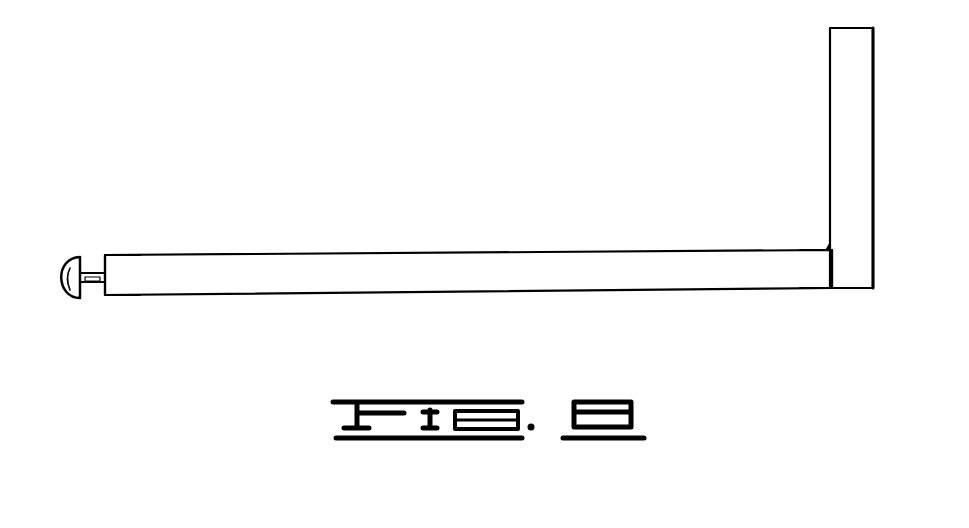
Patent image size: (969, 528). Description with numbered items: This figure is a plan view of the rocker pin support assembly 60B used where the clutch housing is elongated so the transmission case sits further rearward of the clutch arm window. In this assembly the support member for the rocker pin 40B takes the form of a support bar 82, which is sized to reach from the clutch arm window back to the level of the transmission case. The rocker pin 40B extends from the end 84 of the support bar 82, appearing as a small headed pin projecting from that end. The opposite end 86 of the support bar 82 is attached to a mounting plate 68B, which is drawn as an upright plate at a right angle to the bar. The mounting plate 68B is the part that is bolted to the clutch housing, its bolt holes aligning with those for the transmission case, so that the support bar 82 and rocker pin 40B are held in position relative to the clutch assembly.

The rocker pin 40B is at (89, 283).
The rocker pin support assembly 60B is at (410, 224).
The mounting plate 68B is at (832, 128).
The support bar 82 is at (475, 252).
The end of the support bar 84 is at (117, 258).
The opposite end of the support bar 86 is at (800, 250).